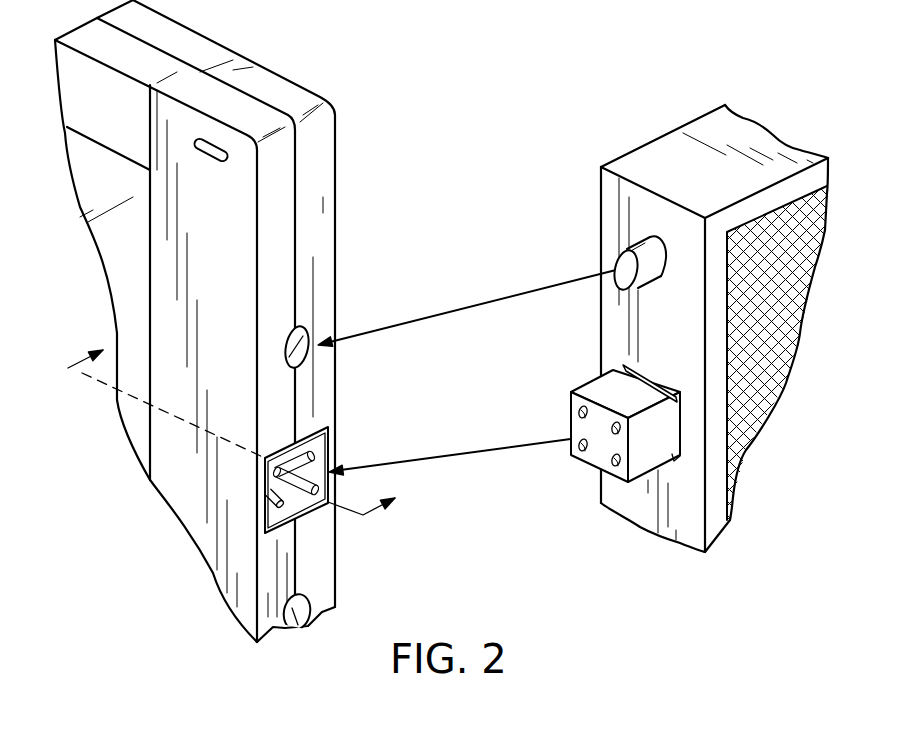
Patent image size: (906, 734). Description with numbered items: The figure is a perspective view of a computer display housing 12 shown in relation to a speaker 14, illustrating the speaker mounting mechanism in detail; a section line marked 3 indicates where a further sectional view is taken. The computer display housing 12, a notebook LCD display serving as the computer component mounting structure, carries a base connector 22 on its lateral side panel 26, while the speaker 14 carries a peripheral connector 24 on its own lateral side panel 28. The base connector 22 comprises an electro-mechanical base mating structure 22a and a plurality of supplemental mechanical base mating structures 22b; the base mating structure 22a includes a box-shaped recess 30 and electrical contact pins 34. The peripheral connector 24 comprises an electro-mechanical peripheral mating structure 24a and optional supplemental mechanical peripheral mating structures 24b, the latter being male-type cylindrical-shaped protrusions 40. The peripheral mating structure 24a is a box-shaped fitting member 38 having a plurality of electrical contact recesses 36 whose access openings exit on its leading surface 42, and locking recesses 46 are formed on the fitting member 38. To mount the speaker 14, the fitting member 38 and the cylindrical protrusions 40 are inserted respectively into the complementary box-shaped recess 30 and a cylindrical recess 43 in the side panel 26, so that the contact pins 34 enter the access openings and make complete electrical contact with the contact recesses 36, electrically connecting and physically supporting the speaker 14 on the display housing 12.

The computer display housing 12 is at (285, 70).
The speaker 14 is at (650, 136).
The base connector 22 is at (387, 314).
The electro-mechanical base mating structure 22a is at (331, 448).
The supplemental mechanical base mating structures 22b is at (278, 343).
The peripheral connector 24 is at (656, 380).
The electro-mechanical peripheral mating structure 24a is at (656, 448).
The supplemental mechanical peripheral mating structures 24b is at (609, 257).
The lateral side panel 26 is at (322, 172).
The lateral side panel 28 is at (606, 192).
The box-shaped recess 30 is at (282, 462).
The electrical contact pins 34 is at (303, 494).
The electrical contact recesses 36 is at (580, 415).
The box-shaped fitting member 38 is at (668, 415).
The male cylindrical protrusions 40 is at (635, 289).
The leading surface 42 is at (601, 413).
The cylindrical recess 43 is at (303, 336).
The locking recesses 46 is at (661, 384).
The section line 3- 3 is at (238, 429).